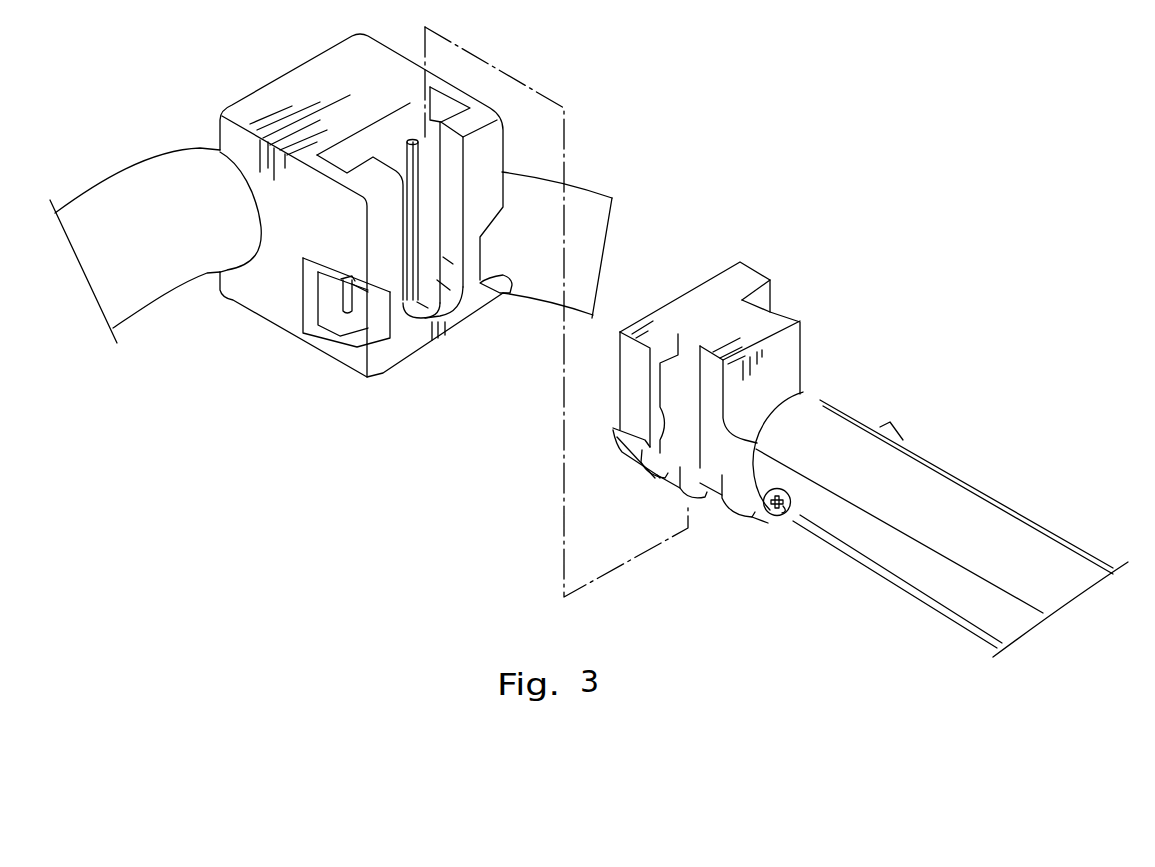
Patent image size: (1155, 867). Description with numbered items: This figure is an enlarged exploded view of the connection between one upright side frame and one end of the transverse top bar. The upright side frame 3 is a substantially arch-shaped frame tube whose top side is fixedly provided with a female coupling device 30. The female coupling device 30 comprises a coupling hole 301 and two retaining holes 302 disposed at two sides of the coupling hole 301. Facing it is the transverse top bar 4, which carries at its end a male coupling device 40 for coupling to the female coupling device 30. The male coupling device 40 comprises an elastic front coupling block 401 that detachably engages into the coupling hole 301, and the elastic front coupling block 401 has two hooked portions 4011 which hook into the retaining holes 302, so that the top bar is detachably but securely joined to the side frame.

The upright side frame 3 is at (137, 155).
The female coupling device 30 is at (460, 85).
The coupling hole 301 is at (330, 250).
The retaining holes 302 is at (328, 350).
The transverse top bar 4 is at (935, 447).
The male coupling device 40 is at (707, 290).
The elastic front coupling block 401 is at (628, 372).
The hooked portions 4011 is at (617, 447).